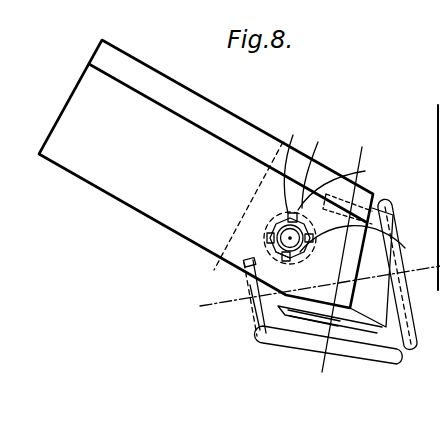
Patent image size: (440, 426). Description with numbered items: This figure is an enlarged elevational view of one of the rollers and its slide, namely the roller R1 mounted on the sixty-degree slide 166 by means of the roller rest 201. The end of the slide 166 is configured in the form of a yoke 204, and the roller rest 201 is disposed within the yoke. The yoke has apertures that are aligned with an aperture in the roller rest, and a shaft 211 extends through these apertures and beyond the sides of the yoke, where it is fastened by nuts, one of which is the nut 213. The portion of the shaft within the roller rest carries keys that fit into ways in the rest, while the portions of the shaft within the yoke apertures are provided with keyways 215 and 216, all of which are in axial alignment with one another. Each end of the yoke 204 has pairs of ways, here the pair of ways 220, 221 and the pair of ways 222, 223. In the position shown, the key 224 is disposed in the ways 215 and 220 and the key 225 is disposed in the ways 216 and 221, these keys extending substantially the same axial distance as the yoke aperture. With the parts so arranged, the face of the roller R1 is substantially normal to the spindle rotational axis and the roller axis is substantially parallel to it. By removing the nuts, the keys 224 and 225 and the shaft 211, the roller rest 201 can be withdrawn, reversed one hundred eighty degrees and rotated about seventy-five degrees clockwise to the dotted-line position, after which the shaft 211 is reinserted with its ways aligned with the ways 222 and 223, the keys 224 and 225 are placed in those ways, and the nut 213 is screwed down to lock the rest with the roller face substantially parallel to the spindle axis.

The 60° slide 166 is at (182, 213).
The roller rest 201 is at (290, 335).
The yoke 204 is at (241, 253).
The shaft 211 is at (297, 242).
The nut 213 is at (256, 194).
The keyway 215 is at (362, 170).
The keyway 216 is at (298, 256).
The way 220 is at (290, 166).
The way 221 is at (244, 266).
The way 222 is at (277, 234).
The way 223 is at (393, 242).
The key 224 is at (323, 168).
The key 225 is at (258, 296).
The roller R1 is at (345, 352).